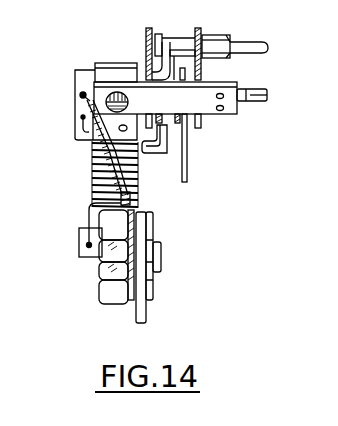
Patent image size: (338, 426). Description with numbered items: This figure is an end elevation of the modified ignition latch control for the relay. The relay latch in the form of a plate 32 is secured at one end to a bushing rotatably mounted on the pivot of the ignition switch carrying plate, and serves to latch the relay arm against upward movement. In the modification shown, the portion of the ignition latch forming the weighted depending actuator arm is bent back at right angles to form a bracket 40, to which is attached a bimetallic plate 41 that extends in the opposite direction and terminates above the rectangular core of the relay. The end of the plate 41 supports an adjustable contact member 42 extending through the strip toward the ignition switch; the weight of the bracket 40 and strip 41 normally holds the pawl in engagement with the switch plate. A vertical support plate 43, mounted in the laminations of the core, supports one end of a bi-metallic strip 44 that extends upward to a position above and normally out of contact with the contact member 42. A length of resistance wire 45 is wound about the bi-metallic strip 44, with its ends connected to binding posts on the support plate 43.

The relay latch plate 32 is at (186, 163).
The bracket 40 is at (213, 79).
The bimetallic plate 41 is at (197, 103).
The adjustable contact member 42 is at (106, 94).
The vertical support plate 43 is at (148, 307).
The bi-metallic strip 44 is at (93, 142).
The resistance wire 45 is at (92, 178).